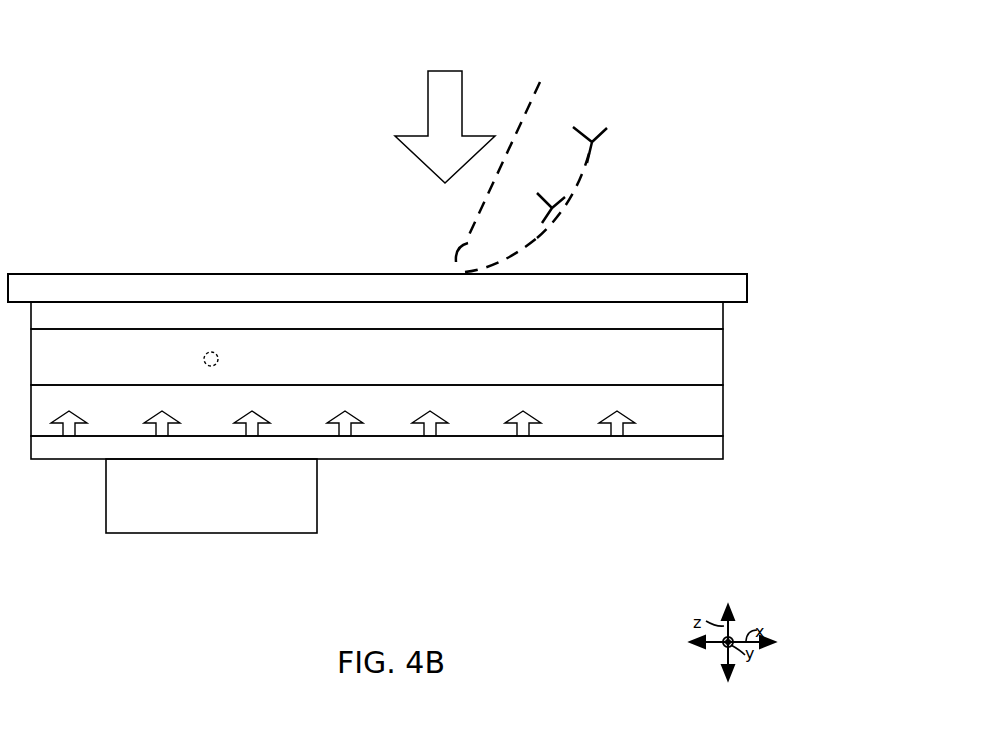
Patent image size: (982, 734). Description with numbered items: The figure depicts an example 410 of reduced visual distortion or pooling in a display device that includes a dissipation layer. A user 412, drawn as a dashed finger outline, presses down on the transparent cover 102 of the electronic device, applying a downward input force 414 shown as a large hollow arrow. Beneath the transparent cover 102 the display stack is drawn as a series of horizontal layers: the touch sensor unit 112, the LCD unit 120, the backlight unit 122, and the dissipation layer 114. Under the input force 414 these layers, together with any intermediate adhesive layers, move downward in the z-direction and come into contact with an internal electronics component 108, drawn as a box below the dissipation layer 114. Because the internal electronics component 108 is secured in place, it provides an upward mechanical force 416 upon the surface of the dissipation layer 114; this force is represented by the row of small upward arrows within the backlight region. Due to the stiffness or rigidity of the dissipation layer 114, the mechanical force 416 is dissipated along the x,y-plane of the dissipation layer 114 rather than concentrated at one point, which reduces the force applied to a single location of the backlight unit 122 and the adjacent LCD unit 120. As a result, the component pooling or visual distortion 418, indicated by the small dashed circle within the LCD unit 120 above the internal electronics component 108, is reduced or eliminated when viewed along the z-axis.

The transparent cover 102 is at (397, 298).
The touch sensor unit 112 is at (307, 326).
The LCD unit 120 is at (350, 370).
The backlight unit 122 is at (331, 406).
The dissipation layer 114 is at (318, 456).
The internal electronics component 108 is at (175, 493).
The mechanical force 416 is at (523, 423).
The component pooling or visual distortion 418 is at (209, 352).
The input force 414 is at (462, 153).
The user 412 is at (565, 170).
The example of reduced visual distortion or pooling 410 is at (656, 66).